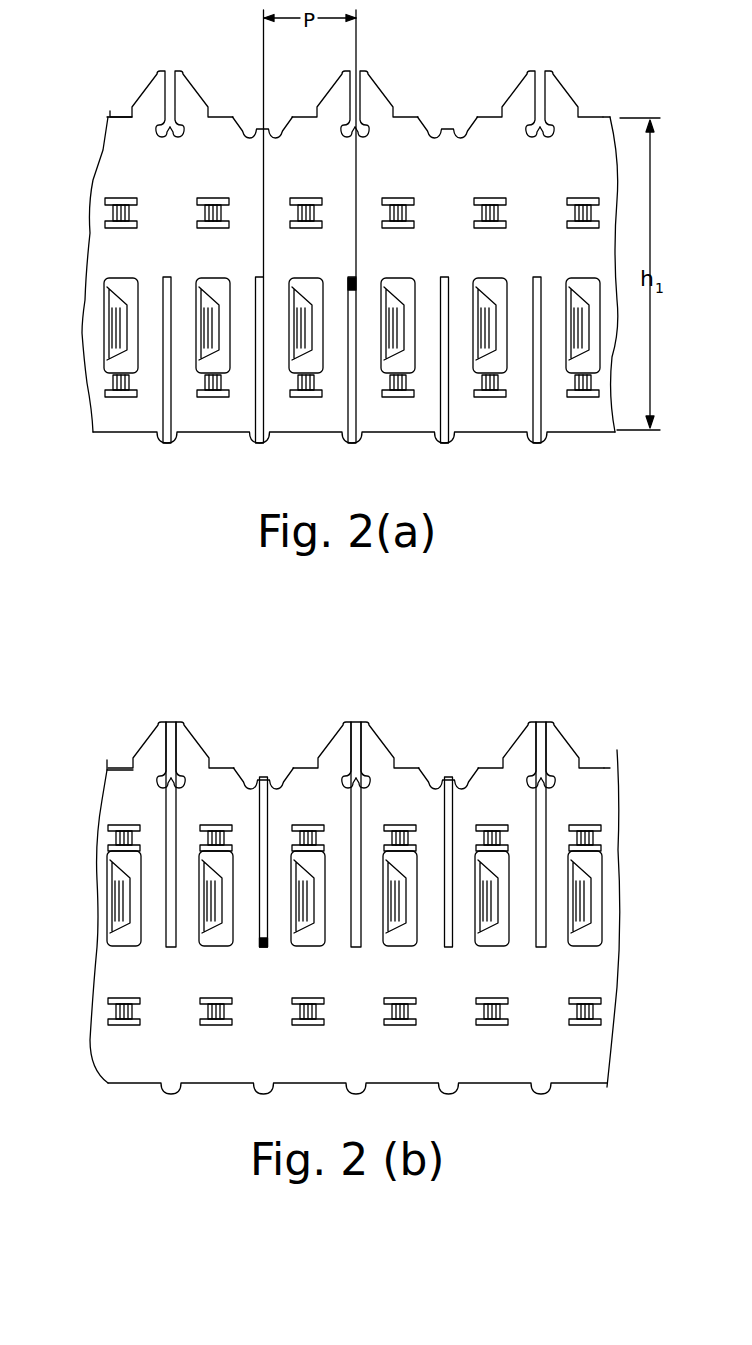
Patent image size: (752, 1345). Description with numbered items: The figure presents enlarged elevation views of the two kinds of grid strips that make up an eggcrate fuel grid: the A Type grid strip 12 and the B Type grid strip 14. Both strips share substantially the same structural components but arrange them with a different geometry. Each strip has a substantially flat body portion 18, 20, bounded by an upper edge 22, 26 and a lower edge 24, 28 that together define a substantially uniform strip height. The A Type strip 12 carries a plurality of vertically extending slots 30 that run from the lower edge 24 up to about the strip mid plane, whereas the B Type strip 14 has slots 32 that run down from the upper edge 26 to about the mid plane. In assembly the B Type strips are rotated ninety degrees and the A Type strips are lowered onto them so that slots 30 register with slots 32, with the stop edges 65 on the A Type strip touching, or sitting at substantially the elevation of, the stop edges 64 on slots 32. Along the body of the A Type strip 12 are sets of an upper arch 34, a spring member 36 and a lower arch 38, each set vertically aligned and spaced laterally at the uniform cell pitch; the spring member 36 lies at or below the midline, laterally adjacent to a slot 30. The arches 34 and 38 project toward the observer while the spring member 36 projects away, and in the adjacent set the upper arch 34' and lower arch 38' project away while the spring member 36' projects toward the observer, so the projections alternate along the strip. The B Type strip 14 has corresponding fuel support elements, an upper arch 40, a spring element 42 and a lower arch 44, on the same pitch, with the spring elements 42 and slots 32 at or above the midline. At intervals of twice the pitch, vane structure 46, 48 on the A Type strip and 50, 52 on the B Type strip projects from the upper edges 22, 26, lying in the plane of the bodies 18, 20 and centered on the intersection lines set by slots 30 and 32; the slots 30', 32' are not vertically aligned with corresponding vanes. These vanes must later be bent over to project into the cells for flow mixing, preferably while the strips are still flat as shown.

In FIG. 2A, the A Type grid strip 12 is at (420, 108).
In FIG. 2B, the B Type grid strip 14 is at (420, 755).
In FIG. 2A, the flat body portion 18 is at (137, 252).
In FIG. 2B, the flat body portion 20 is at (115, 988).
In FIG. 2A, the upper edge 22 is at (588, 117).
In FIG. 2A, the lower edge 24 is at (587, 432).
In FIG. 2B, the upper edge 26 is at (588, 767).
In FIG. 2B, the lower edge 28 is at (580, 1087).
In FIG. 2A, the slot 30 is at (374, 390).
In FIG. 2A, the slot 30' is at (246, 390).
In FIG. 2B, the slot 32 is at (378, 801).
In FIG. 2B, the slot 32' is at (397, 800).
In FIG. 2A, the upper arch 34 is at (182, 147).
In FIG. 2A, the upper arch 34' is at (133, 170).
In FIG. 2A, the spring member 36 is at (85, 325).
In FIG. 2A, the spring member 36' is at (132, 325).
In FIG. 2A, the lower arch 38 is at (85, 400).
In FIG. 2A, the lower arch 38' is at (188, 439).
In FIG. 2B, the upper arch 40 is at (116, 831).
In FIG. 2B, the spring element 42 is at (113, 881).
In FIG. 2B, the lower arch 44 is at (112, 1012).
In FIG. 2A, the vane 46 is at (357, 63).
In FIG. 2A, the vane 48 is at (380, 90).
In FIG. 2B, the vane 50 is at (334, 737).
In FIG. 2B, the vane 52 is at (377, 734).
In FIG. 2B, the stop edge 64 is at (263, 944).
In FIG. 2A, the stop edge 65 is at (352, 290).